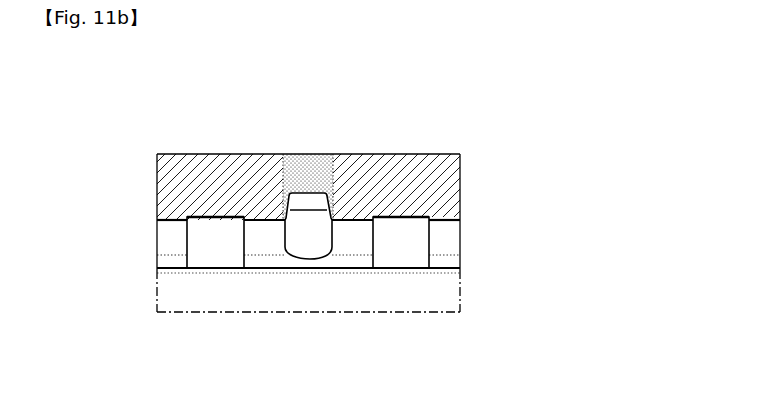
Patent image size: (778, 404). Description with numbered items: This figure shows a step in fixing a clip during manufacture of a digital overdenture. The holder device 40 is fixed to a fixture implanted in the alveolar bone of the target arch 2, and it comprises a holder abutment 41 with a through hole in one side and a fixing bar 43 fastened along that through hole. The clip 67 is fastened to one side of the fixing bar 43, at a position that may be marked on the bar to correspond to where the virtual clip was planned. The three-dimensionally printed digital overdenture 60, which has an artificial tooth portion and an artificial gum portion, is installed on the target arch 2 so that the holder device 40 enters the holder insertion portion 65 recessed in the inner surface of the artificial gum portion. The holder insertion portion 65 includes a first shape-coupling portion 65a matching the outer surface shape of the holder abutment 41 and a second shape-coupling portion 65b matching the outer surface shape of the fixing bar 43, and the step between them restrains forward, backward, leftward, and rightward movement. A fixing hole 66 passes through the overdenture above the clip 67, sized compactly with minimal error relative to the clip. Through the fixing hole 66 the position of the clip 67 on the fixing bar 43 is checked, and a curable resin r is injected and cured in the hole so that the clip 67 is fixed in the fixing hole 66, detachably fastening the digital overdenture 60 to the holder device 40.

The target arch 2 is at (462, 293).
The holder device 40 is at (366, 198).
The holder abutment 41 is at (432, 210).
The fixing bar 43 is at (455, 219).
The digital overdenture 60 is at (307, 164).
The holder insertion portion 65 is at (281, 144).
The first shape-coupling portion 65a is at (400, 212).
The second shape-coupling portion 65b is at (347, 217).
The fixing hole 66 is at (283, 188).
The clip 67 is at (302, 192).
The curable resin r is at (313, 167).